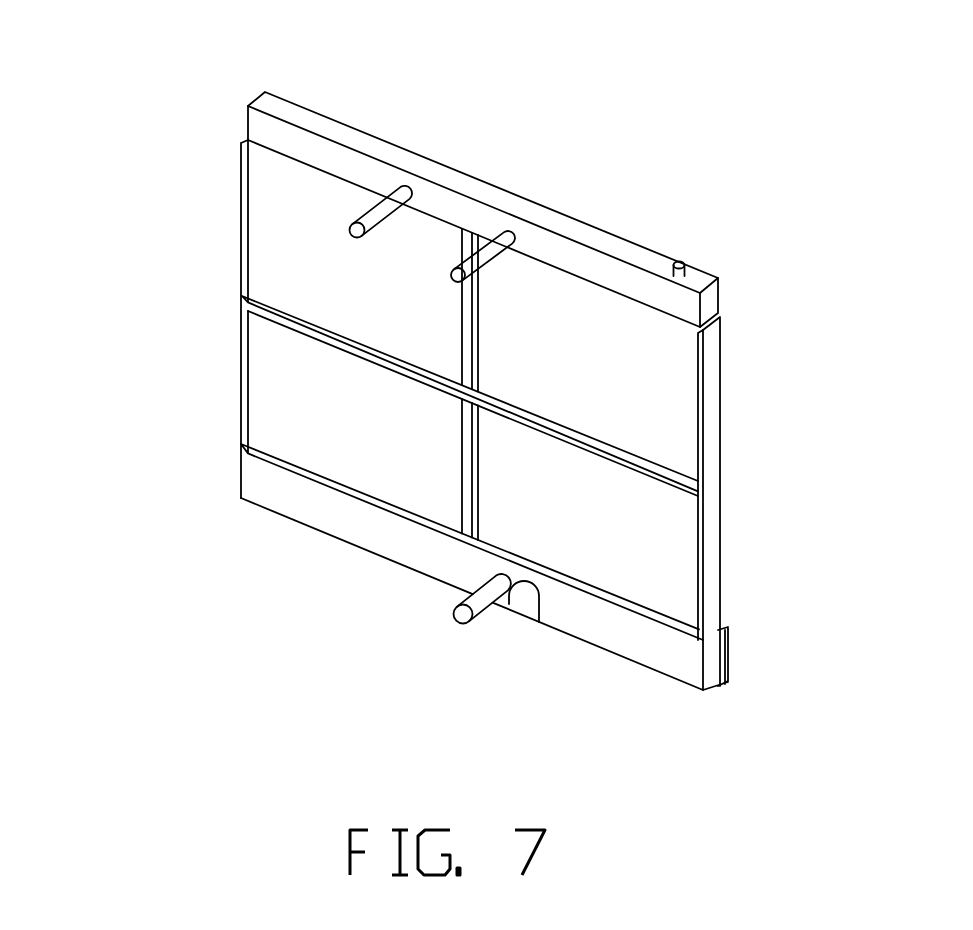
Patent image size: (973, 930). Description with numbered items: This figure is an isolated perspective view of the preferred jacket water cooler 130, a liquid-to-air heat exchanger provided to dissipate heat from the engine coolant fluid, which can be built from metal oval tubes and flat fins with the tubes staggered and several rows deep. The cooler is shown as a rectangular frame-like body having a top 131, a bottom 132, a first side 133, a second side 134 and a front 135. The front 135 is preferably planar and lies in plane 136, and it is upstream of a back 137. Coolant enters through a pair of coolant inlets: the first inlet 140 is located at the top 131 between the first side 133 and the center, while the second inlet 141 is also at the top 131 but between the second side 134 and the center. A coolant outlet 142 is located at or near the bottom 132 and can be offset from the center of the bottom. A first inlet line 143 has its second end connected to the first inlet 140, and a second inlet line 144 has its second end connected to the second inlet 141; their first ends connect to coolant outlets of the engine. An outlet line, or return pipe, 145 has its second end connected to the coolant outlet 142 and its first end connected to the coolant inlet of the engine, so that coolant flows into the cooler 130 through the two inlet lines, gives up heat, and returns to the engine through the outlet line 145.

The jacket water cooler 130 is at (746, 191).
The top 131 is at (600, 240).
The bottom 132 is at (333, 537).
The first side 133 is at (240, 245).
The second side 134 is at (710, 455).
The front 135 is at (645, 548).
The plane 136 is at (585, 503).
The back 137 is at (722, 375).
The first coolant inlet 140 is at (378, 203).
The second coolant inlet 141 is at (508, 236).
The coolant outlet 142 is at (526, 611).
The first inlet line 143 is at (380, 207).
The second inlet line 144 is at (486, 252).
The outlet line 145 is at (463, 614).